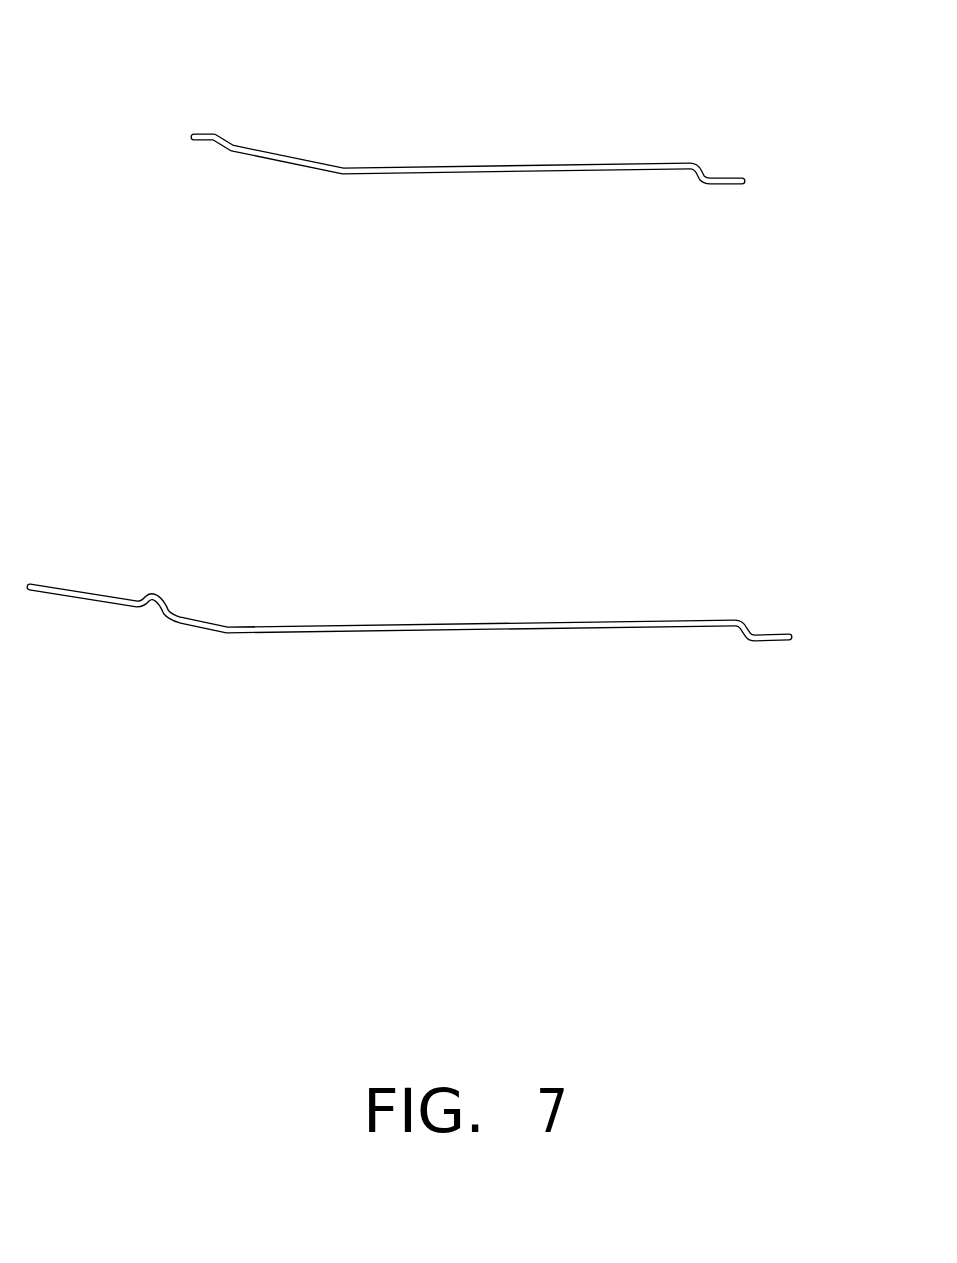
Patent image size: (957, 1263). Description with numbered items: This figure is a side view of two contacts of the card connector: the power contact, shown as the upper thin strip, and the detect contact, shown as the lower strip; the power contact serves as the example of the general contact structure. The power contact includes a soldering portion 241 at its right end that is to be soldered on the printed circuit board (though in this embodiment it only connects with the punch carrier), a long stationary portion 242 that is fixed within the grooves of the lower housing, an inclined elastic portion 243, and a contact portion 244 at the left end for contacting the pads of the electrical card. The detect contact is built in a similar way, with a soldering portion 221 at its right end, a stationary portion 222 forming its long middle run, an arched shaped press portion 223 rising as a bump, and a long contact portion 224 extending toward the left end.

The soldering portion 221 is at (772, 632).
The stationary portion 222 is at (500, 622).
The arched shaped press portion 223 is at (157, 595).
The long contact portion 224 is at (50, 582).
The soldering portion 241 is at (725, 186).
The stationary portion 242 is at (532, 170).
The elastic portion 243 is at (278, 162).
The contact portion 244 is at (217, 133).